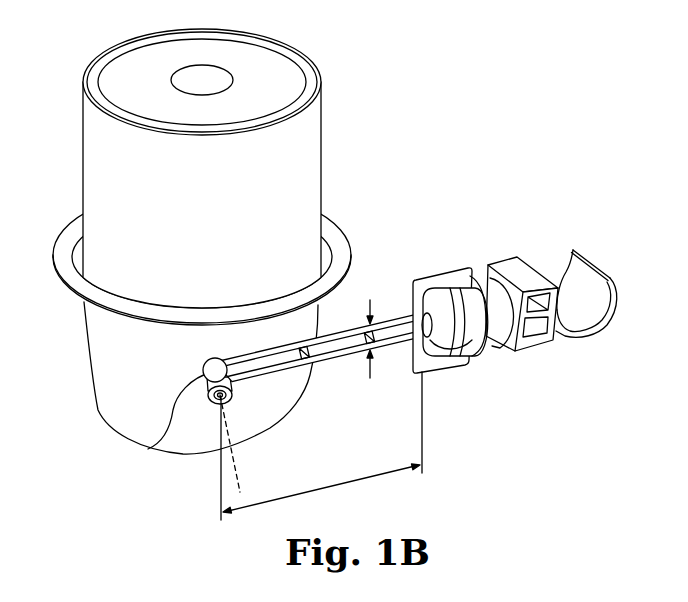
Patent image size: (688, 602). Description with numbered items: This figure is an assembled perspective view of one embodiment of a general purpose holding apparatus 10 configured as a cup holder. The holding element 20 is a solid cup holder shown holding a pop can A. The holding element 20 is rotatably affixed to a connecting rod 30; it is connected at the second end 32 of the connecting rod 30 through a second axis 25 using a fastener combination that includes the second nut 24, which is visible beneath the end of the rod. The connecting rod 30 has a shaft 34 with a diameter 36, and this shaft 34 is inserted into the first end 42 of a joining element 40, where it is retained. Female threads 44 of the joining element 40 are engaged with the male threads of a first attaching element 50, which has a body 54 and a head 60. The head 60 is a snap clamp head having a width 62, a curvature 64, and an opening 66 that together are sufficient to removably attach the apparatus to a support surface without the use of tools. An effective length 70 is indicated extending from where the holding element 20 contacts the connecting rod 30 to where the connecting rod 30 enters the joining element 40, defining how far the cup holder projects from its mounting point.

The pop can A is at (84, 172).
The general purpose holding apparatus 10 is at (450, 159).
The holding element 20 is at (110, 364).
The second nut 24 is at (213, 406).
The second axis 25 is at (238, 472).
The connecting rod 30 is at (314, 349).
The second end 32 is at (148, 450).
The shaft 34 is at (350, 338).
The diameter 36 is at (370, 330).
The joining element 40 is at (471, 369).
The first end 42 is at (414, 355).
The female threads 44 is at (477, 282).
The first attaching element 50 is at (536, 300).
The body 54 is at (493, 328).
The head 60 is at (541, 343).
The width 62 is at (597, 293).
The curvature 64 is at (600, 330).
The opening 66 is at (558, 272).
The effective length 70 is at (330, 486).